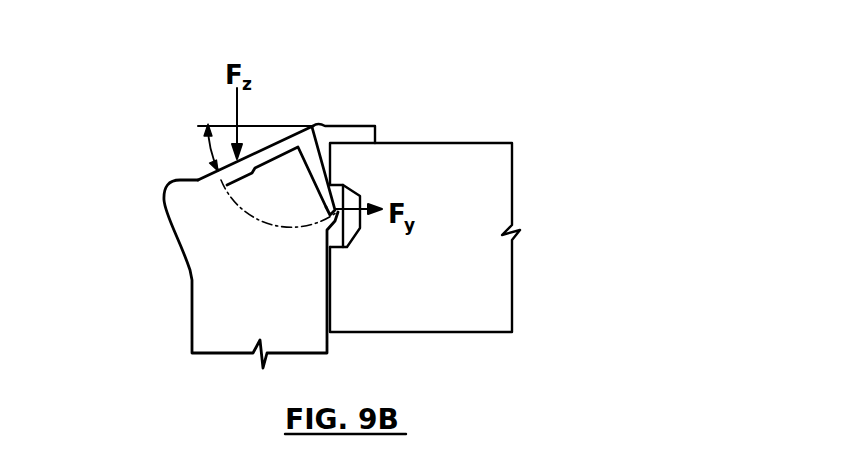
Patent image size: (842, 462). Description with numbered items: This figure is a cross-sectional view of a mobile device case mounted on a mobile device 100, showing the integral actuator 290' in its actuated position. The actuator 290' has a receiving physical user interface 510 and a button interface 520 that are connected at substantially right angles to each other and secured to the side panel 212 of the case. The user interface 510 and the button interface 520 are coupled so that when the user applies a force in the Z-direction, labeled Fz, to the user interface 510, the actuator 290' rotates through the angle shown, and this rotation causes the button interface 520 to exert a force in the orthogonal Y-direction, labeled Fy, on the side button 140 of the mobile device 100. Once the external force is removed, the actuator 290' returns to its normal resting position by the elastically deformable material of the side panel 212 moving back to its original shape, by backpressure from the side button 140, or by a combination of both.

The mobile device 100 is at (463, 143).
The side button 140 is at (350, 197).
The left side panel 212 is at (200, 313).
The receiving physical user interface 510 is at (280, 148).
The button interface 520 is at (318, 175).
The integral actuator 290' is at (213, 145).